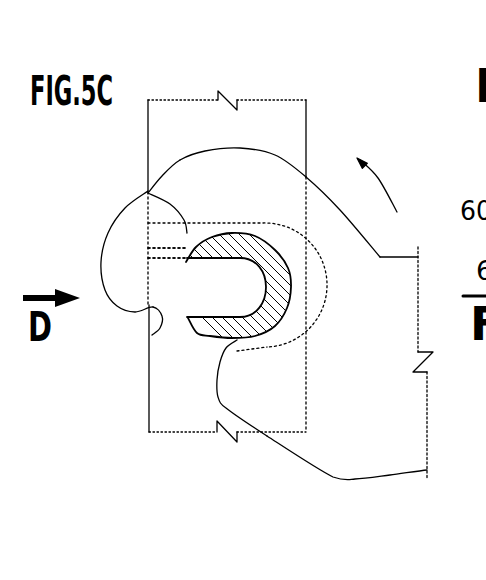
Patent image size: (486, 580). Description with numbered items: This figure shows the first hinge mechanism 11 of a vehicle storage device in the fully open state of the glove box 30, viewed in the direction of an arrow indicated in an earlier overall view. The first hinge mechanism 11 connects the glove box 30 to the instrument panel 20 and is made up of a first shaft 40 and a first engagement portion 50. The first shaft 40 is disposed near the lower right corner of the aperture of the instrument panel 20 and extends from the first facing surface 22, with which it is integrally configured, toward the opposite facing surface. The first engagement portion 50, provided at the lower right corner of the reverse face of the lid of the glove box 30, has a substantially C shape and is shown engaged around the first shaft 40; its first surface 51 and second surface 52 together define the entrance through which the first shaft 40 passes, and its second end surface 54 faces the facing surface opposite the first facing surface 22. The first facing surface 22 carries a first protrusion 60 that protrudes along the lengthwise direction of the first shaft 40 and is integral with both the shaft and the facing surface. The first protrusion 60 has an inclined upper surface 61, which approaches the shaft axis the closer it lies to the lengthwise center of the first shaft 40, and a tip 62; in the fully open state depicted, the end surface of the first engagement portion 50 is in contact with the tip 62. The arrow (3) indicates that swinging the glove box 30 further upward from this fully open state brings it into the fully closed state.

The arrow 3 is at (387, 178).
The first hinge mechanism 11 is at (323, 117).
The instrument panel 20 is at (237, 250).
The first facing surface 22 is at (187, 122).
The glove box 30 is at (400, 431).
The first shaft 40 is at (255, 285).
The first engagement portion 50 is at (212, 152).
The first surface 51 is at (148, 335).
The second surface 52 is at (225, 360).
The second end surface 54 is at (258, 178).
The first protrusion 60 is at (138, 238).
The upper surface 61 is at (145, 193).
The tip 62 is at (168, 258).